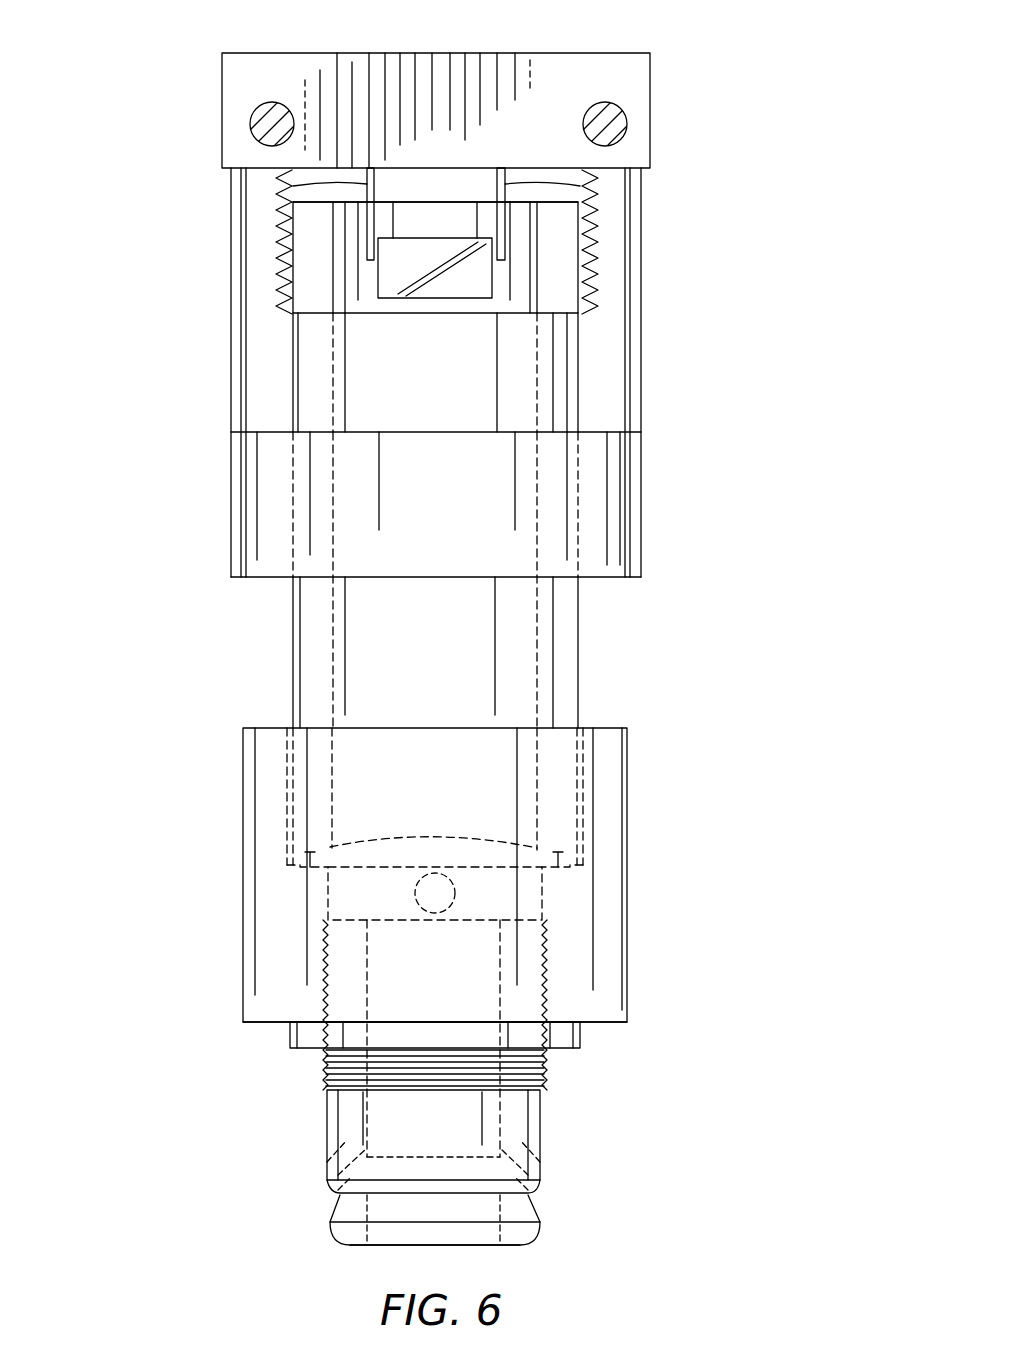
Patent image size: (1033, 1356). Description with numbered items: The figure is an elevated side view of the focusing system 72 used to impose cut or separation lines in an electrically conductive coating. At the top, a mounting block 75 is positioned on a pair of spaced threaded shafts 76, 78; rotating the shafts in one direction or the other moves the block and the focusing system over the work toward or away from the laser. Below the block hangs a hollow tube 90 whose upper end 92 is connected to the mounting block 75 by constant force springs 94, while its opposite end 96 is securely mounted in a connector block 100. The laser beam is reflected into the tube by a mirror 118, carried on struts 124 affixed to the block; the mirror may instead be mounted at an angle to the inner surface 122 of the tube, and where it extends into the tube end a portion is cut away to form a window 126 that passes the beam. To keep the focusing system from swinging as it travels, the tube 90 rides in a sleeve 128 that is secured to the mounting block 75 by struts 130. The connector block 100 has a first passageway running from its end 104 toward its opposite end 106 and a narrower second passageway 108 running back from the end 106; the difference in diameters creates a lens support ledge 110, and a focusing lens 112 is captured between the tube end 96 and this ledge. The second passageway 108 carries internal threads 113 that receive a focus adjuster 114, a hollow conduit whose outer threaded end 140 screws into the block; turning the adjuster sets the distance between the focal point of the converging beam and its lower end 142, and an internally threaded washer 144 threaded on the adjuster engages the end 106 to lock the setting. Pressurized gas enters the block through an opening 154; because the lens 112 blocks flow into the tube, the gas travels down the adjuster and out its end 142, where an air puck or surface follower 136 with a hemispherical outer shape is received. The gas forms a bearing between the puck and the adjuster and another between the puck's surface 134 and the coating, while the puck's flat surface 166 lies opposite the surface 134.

The focusing system 72 is at (683, 656).
The mounting block 75 is at (586, 53).
The threaded shaft 76 is at (628, 124).
The threaded shaft 78 is at (250, 124).
The hollow tube 90 is at (580, 350).
The end of tube 92 is at (420, 205).
The constant force springs 94 is at (280, 270).
The opposite end of tube 96 is at (290, 865).
The connector block 100 is at (628, 903).
The end of connector block 104 is at (610, 728).
The opposite end of connector block 106 is at (627, 1022).
The second passageway 108 is at (320, 972).
The lens support ledge 110 is at (580, 885).
The focusing lens 112 is at (430, 835).
The internal threads 113 is at (547, 968).
The focus adjuster 114 is at (540, 1130).
The mirror 118 is at (455, 290).
The inner surface of tube 122 is at (477, 185).
The struts 124 is at (300, 185).
The window 126 is at (318, 308).
The sleeve 128 is at (268, 520).
The struts 130 is at (235, 340).
The surface of puck 134 is at (515, 1245).
The air puck 136 is at (540, 1225).
The outer threaded end 140 is at (322, 1070).
The end of focusing adjuster 142 is at (332, 1195).
The internally threaded washer 144 is at (290, 1035).
The opening 154 is at (412, 893).
The flat surface 166 is at (412, 1157).